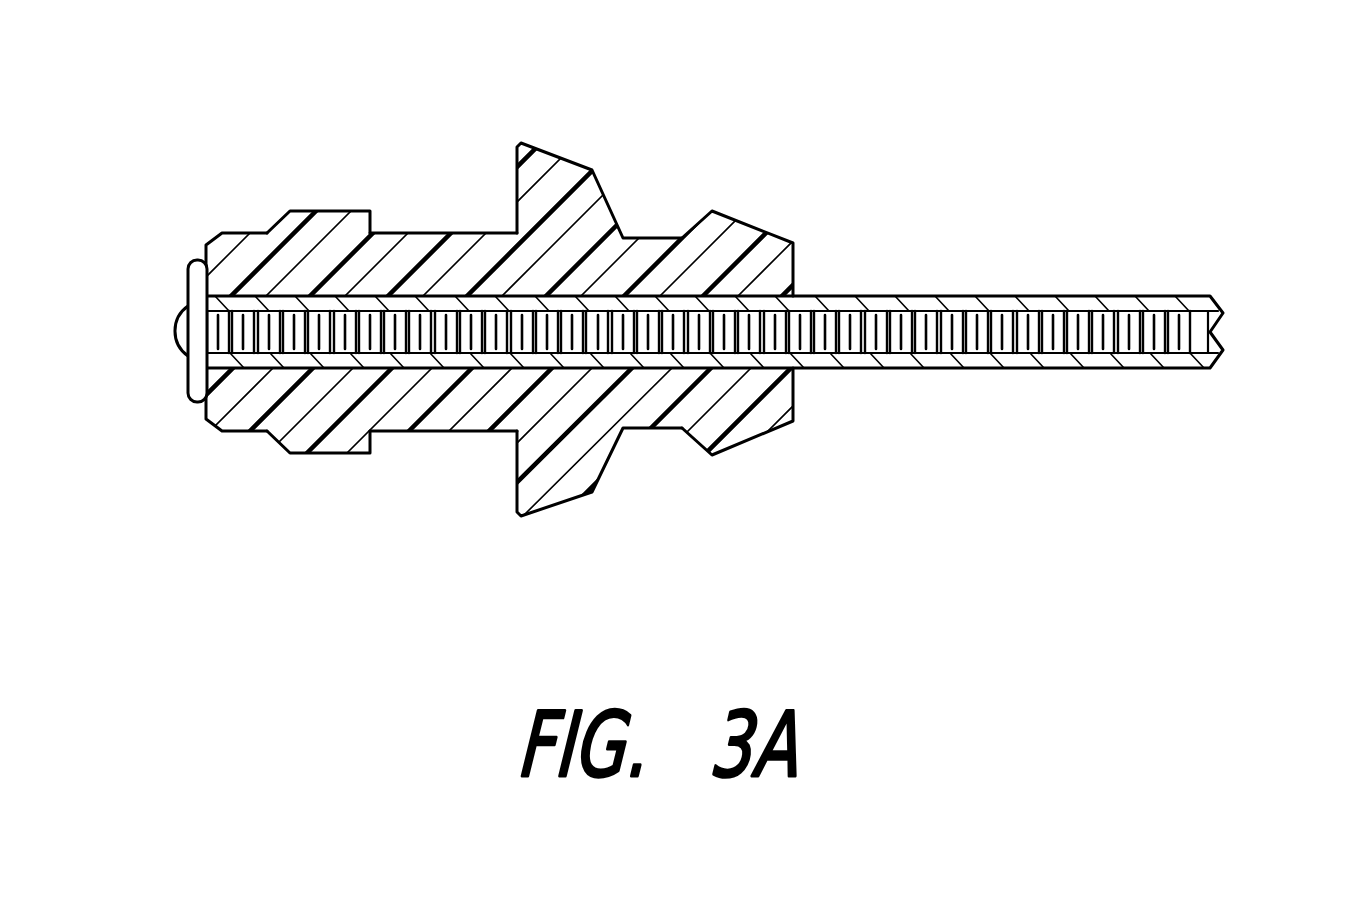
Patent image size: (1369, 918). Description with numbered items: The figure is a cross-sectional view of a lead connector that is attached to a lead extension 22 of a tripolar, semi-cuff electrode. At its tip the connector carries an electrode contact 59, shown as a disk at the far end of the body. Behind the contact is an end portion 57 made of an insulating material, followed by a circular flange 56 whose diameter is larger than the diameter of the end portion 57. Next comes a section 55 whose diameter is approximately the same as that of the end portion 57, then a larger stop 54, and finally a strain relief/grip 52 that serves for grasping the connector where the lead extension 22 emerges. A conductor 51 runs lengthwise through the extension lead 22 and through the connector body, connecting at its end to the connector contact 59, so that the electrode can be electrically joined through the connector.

The lead extension 22 is at (1082, 297).
The conductor 51 is at (1198, 332).
The strain relief/grip 52 is at (752, 223).
The stop 54 is at (563, 158).
The section 55 is at (421, 232).
The circular flange 56 is at (333, 210).
The end portion 57 is at (238, 232).
The electrode contact 59 is at (188, 377).